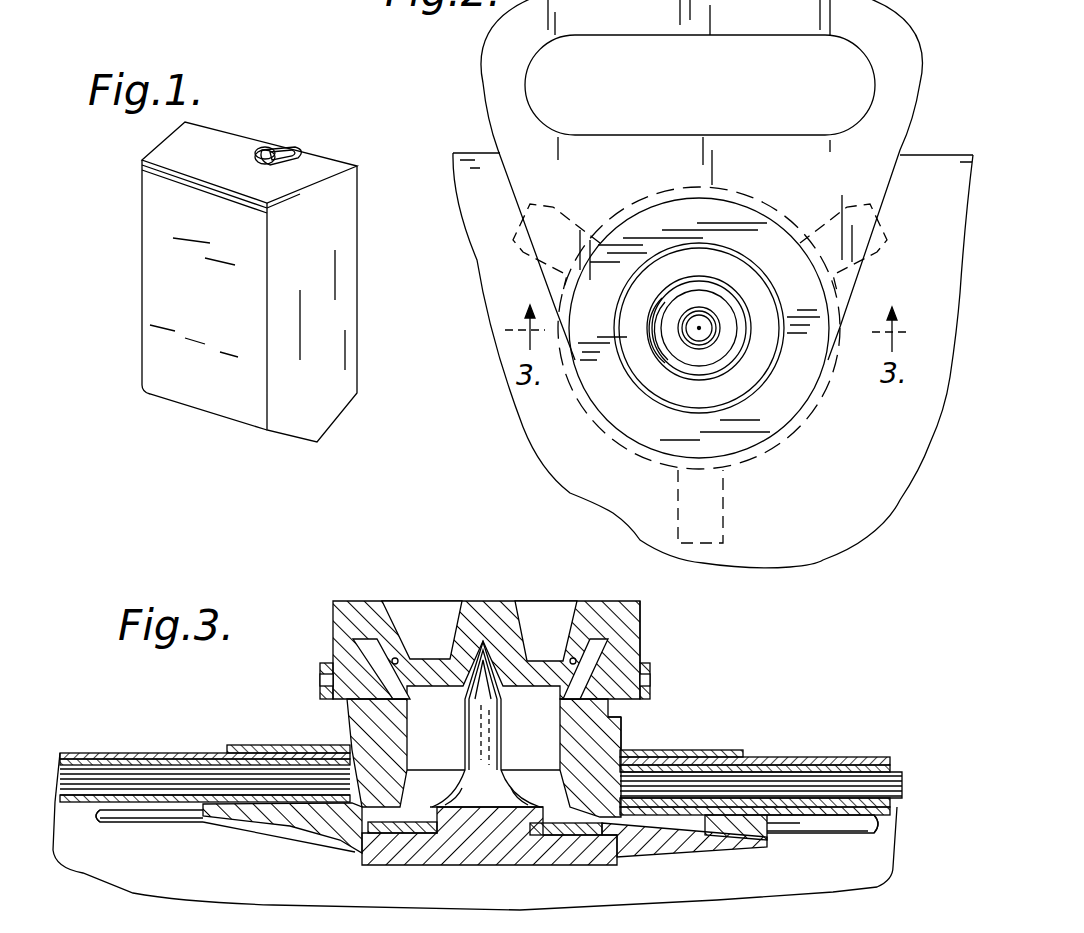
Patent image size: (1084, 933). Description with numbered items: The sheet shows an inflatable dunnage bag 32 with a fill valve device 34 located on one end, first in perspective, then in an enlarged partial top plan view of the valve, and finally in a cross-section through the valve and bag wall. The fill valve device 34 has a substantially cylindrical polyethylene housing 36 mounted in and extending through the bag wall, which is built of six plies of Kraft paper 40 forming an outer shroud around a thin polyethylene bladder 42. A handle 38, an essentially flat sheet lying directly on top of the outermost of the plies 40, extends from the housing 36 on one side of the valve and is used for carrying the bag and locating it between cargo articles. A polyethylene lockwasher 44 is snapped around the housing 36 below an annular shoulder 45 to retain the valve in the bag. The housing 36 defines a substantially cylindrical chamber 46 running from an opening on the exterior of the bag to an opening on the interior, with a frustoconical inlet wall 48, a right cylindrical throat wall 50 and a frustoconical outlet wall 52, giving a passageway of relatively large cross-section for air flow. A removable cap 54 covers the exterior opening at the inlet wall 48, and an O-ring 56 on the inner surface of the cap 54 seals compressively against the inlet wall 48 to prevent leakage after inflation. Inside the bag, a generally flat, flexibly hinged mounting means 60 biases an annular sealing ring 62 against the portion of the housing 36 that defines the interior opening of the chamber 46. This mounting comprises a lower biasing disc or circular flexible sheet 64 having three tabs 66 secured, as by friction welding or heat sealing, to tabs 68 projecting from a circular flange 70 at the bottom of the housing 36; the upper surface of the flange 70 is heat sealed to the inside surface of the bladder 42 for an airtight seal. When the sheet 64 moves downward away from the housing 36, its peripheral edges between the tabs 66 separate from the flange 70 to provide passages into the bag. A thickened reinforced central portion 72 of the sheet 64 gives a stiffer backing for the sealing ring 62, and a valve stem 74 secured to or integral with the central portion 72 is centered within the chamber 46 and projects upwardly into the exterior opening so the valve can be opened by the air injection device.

In FIG. 1, the inflatable dunnage bag 32 is at (207, 398).
In FIG. 1, the fill valve device 34 is at (254, 148).
In FIG. 2, the fill valve device 34 is at (590, 440).
In FIG. 3, the fill valve device 34 is at (690, 670).
In FIG. 3, the housing 36 is at (628, 723).
In FIG. 1, the handle 38 is at (290, 143).
In FIG. 2, the handle 38 is at (735, 27).
In FIG. 3, the handle 38 is at (798, 758).
In FIG. 3, the plies of Kraft paper 40 is at (906, 798).
In FIG. 3, the bladder 42 is at (890, 811).
In FIG. 2, the lockwasher 44 is at (776, 420).
In FIG. 3, the lockwasher 44 is at (745, 750).
In FIG. 3, the annular shoulder 45 is at (630, 752).
In FIG. 3, the chamber 46 is at (422, 722).
In FIG. 3, the inlet wall 48 is at (506, 724).
In FIG. 3, the throat wall 50 is at (560, 757).
In FIG. 3, the outlet wall 52 is at (486, 788).
In FIG. 2, the removable cap 54 is at (760, 376).
In FIG. 3, the removable cap 54 is at (515, 650).
In FIG. 3, the O-ring 56 is at (479, 632).
In FIG. 3, the mounting means 60 is at (203, 843).
In FIG. 3, the annular sealing ring 62 is at (583, 830).
In FIG. 3, the circular flexible sheet 64 is at (650, 852).
In FIG. 3, the tabs 66 is at (163, 823).
In FIG. 2, the tabs 68 is at (560, 205).
In FIG. 3, the tabs 68 is at (94, 812).
In FIG. 3, the circular flange 70 is at (282, 822).
In FIG. 3, the reinforced central portion 72 is at (450, 858).
In FIG. 3, the valve stem 74 is at (478, 752).